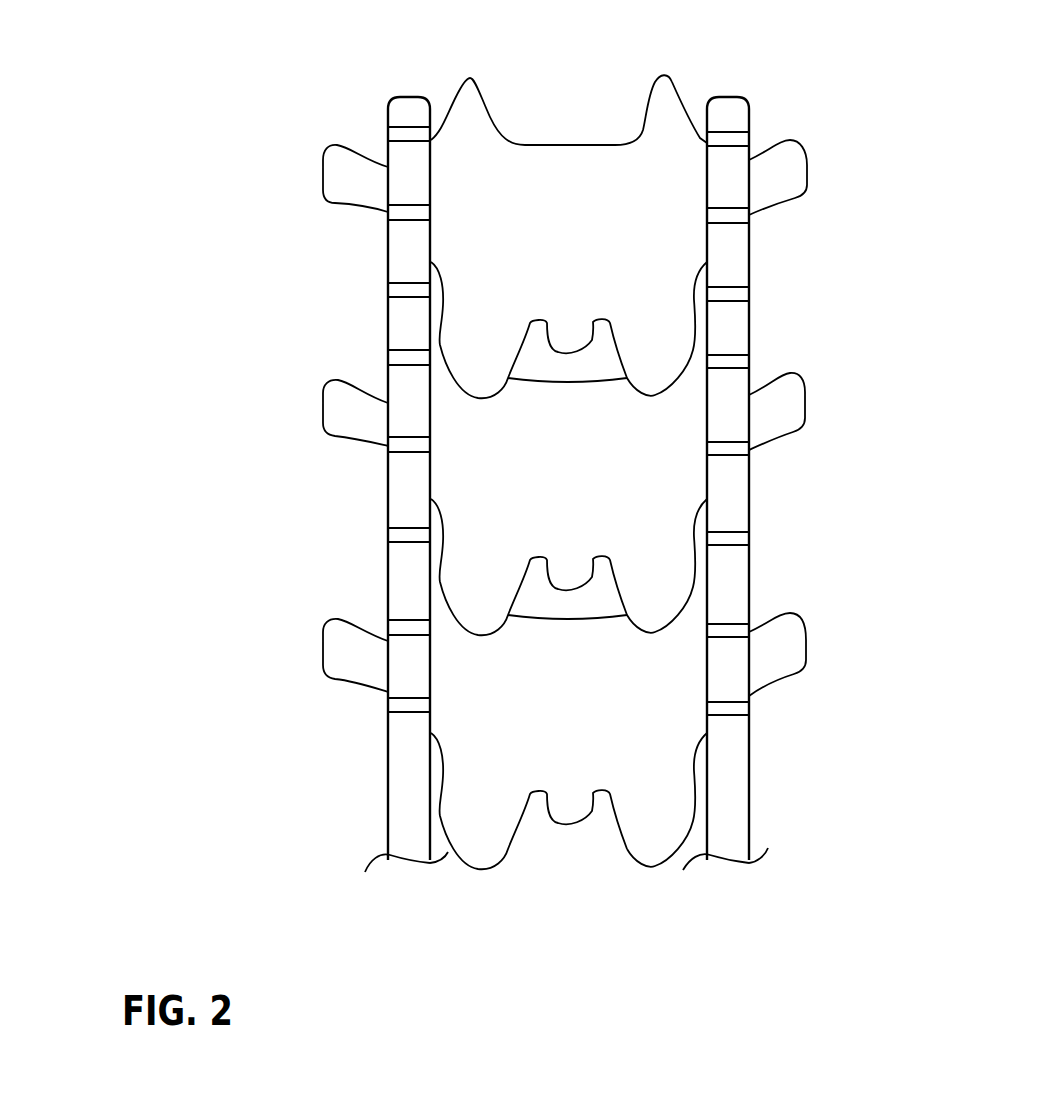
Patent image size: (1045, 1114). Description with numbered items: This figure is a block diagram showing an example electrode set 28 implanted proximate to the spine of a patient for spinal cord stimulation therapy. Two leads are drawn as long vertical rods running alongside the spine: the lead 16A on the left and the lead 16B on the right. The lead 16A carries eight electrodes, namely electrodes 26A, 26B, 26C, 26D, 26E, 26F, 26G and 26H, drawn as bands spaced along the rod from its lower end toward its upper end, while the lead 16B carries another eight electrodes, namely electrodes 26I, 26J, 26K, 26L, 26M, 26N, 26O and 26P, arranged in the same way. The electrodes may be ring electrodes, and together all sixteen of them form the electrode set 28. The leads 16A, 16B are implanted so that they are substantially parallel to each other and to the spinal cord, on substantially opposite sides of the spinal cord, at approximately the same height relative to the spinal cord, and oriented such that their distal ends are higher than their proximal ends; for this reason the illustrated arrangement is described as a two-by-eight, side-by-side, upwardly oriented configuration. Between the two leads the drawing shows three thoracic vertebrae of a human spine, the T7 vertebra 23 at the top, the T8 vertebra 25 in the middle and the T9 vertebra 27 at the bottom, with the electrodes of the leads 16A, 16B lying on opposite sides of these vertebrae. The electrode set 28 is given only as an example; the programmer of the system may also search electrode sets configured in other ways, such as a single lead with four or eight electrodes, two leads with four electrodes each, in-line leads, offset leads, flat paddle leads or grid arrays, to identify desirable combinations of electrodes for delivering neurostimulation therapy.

The electrode set 28 is at (165, 72).
The T7 vertebra 23 is at (471, 102).
The T8 vertebra 25 is at (338, 437).
The T9 vertebra 27 is at (652, 852).
The lead 16A is at (400, 785).
The lead 16B is at (752, 825).
The electrode 26A is at (388, 705).
The electrode 26B is at (388, 627).
The electrode 26C is at (388, 535).
The electrode 26D is at (388, 444).
The electrode 26E is at (388, 357).
The electrode 26F is at (388, 289).
The electrode 26G is at (388, 212).
The electrode 26H is at (388, 134).
The electrode 26I is at (749, 708).
The electrode 26J is at (749, 630).
The electrode 26K is at (749, 539).
The electrode 26L is at (749, 449).
The electrode 26M is at (749, 362).
The electrode 26N is at (749, 294).
The electrode 26O is at (749, 215).
The electrode 26P is at (749, 140).